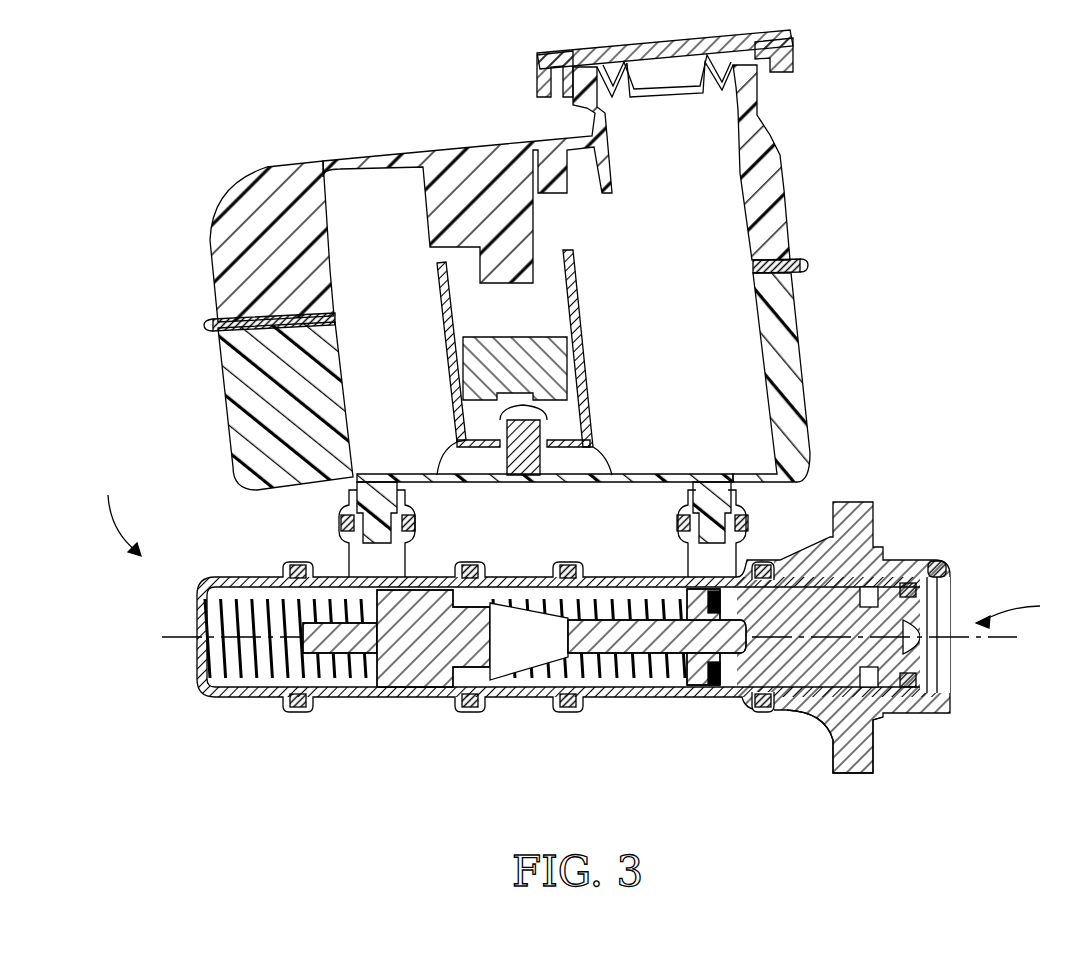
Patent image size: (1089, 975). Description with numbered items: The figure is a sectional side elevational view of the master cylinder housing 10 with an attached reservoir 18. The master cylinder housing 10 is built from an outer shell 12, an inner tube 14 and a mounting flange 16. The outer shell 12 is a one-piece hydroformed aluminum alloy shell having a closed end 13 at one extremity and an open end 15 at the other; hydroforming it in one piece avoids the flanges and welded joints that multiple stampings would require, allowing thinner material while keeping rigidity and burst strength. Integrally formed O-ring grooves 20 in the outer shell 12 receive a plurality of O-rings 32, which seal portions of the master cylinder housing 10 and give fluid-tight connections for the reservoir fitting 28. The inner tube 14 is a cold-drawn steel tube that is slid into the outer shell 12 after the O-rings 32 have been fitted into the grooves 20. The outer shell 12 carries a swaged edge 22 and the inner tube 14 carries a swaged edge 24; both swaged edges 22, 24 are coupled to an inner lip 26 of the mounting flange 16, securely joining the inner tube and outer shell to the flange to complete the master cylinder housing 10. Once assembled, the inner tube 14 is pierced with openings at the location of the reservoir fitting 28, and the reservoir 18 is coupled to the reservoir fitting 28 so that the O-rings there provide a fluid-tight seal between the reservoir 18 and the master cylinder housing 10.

The master cylinder housing 10 is at (118, 511).
The outer shell 12 is at (683, 700).
The closed end 13 is at (195, 656).
The inner tube 14 is at (352, 690).
The open end 15 is at (1025, 610).
The mounting flange 16 is at (862, 773).
The reservoir 18 is at (790, 180).
The O-ring grooves 20 is at (293, 567).
The swaged edge 22 is at (938, 566).
The swaged edge 24 is at (937, 585).
The inner lip 26 is at (937, 690).
The reservoir fitting 28 is at (410, 558).
The O-rings 32 is at (345, 518).